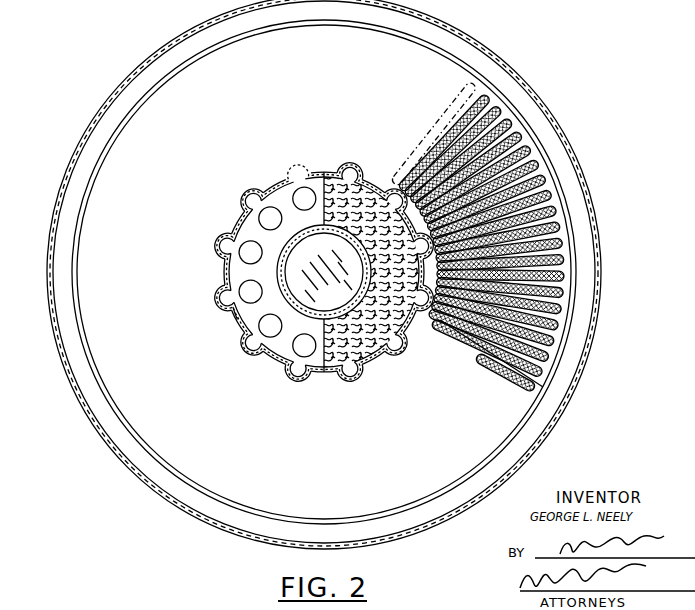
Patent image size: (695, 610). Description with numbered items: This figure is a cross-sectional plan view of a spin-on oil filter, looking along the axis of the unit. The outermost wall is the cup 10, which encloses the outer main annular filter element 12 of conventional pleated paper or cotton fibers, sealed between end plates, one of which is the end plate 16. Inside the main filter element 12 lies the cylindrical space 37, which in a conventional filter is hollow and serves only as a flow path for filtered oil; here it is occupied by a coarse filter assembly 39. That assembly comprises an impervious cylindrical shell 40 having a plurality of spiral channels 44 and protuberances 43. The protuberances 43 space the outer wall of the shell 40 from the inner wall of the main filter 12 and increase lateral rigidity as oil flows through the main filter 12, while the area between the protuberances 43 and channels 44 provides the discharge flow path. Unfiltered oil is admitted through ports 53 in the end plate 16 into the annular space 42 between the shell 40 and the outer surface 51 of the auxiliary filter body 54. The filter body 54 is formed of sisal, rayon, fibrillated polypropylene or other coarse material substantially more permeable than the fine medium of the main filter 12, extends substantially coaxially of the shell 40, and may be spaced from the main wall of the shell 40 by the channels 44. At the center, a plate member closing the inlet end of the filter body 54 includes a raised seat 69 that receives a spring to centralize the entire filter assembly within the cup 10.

The cup 10 is at (93, 122).
The main annular filter element 12 is at (578, 325).
The end plate 16 is at (140, 440).
The cylindrical space 37 is at (430, 307).
The coarse filter assembly 39 is at (334, 165).
The cylindrical shell 40 is at (273, 182).
The annular space 42 is at (380, 188).
The protuberances 43 is at (243, 357).
The spiral channels 44 is at (230, 302).
The outer surface of auxiliary filter body 51 is at (370, 205).
The ports 53 is at (245, 335).
The auxiliary filter body 54 is at (370, 337).
The raised seat 69 is at (310, 248).